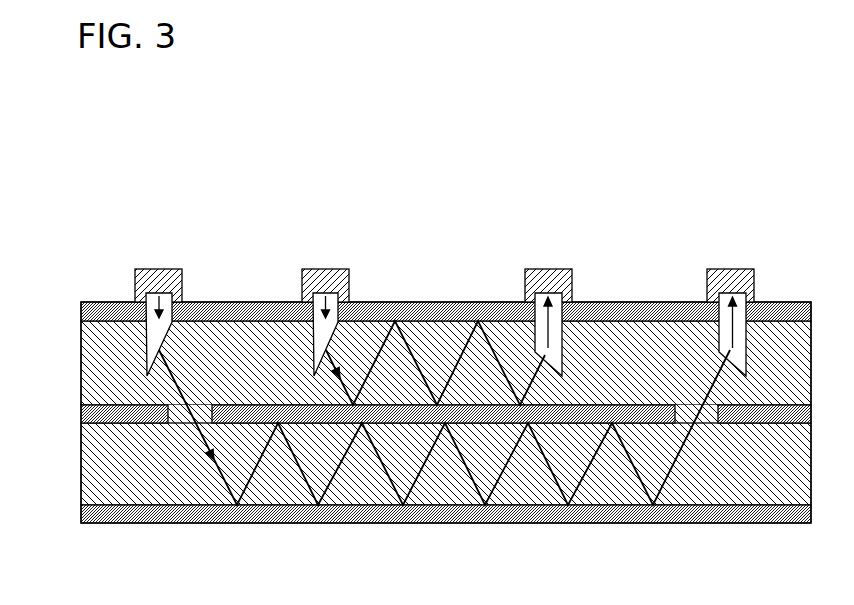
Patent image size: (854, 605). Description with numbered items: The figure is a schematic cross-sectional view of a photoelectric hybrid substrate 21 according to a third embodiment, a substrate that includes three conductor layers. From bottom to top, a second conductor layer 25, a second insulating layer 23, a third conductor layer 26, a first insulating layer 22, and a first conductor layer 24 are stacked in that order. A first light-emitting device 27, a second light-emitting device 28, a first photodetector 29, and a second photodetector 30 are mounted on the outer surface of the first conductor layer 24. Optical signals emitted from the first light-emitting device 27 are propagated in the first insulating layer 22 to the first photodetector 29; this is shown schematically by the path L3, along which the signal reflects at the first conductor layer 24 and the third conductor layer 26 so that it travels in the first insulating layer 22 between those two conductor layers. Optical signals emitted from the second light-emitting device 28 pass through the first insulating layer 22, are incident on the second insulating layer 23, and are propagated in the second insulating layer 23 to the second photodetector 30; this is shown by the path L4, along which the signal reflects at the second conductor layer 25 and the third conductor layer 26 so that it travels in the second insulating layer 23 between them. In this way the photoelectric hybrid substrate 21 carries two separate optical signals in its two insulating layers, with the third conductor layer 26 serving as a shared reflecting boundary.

The photoelectric hybrid substrate 21 is at (206, 164).
The first insulating layer 22 is at (81, 372).
The second insulating layer 23 is at (80, 488).
The first conductor layer 24 is at (100, 302).
The second conductor layer 25 is at (142, 524).
The third conductor layer 26 is at (95, 424).
The first light-emitting device 27 is at (330, 269).
The second light-emitting device 28 is at (170, 269).
The first photodetector 29 is at (540, 269).
The second photodetector 30 is at (723, 269).
The path of optical signal L3 is at (407, 350).
The path of optical signal L4 is at (363, 513).